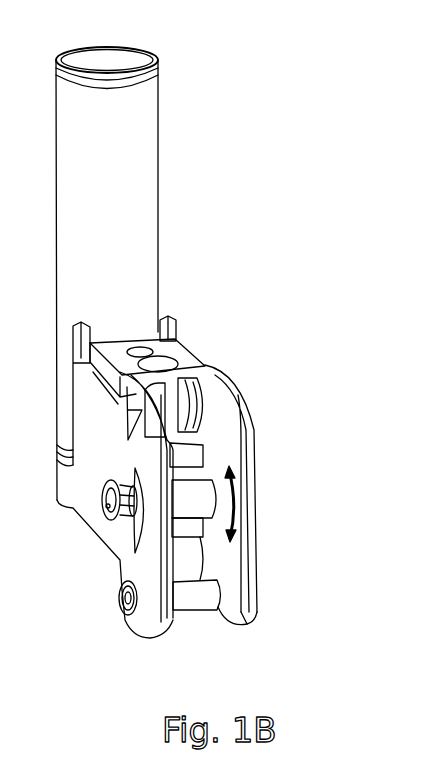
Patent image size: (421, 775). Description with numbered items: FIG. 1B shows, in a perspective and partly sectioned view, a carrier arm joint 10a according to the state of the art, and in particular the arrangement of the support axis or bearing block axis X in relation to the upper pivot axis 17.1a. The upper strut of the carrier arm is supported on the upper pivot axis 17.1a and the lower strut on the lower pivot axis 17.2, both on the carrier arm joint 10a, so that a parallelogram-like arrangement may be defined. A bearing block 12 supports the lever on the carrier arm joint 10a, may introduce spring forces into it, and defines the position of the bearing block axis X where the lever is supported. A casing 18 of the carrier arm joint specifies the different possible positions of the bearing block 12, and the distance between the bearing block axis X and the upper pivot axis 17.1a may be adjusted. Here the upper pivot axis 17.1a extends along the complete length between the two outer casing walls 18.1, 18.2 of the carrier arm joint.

The carrier arm joint 10a is at (236, 192).
The bearing block 12 is at (203, 390).
The bearing block axis X is at (182, 405).
The upper pivot axis 17.1a is at (210, 488).
The lower pivot axis 17.2 is at (203, 603).
The casing 18 is at (199, 512).
The outer casing wall 18.1 is at (143, 630).
The outer casing wall 18.2 is at (257, 531).